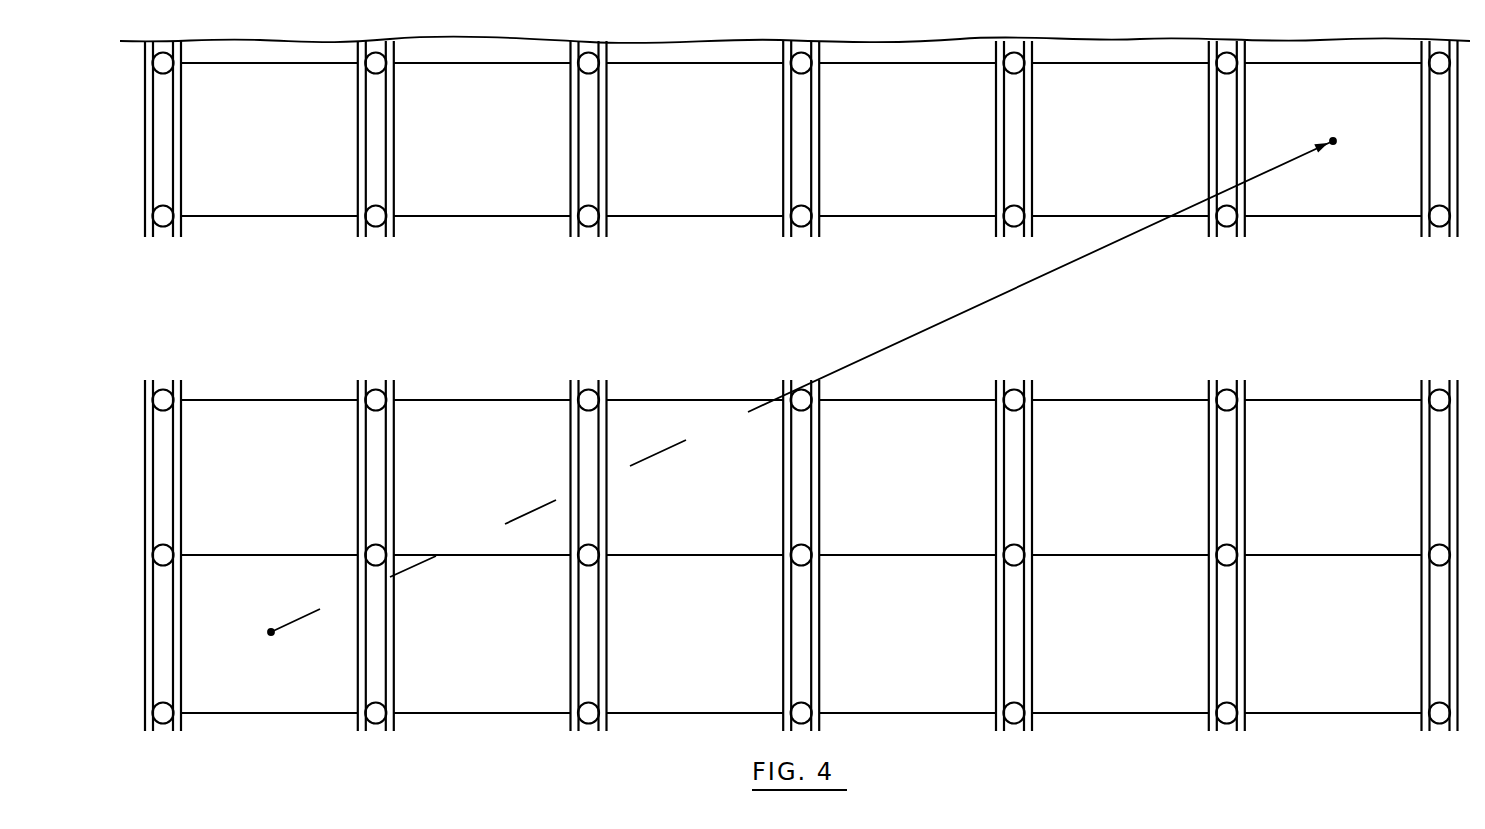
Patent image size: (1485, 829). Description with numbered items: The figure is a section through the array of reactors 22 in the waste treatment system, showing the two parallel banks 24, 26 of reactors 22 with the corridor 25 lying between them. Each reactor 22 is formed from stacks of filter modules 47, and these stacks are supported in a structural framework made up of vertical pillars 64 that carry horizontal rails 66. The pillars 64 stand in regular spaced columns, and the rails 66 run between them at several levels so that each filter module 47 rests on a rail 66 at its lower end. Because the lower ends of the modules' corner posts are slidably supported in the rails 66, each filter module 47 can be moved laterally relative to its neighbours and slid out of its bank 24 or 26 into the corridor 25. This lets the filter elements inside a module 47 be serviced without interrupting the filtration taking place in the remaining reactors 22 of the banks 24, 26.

The reactor 22 is at (483, 170).
The bank 24 is at (272, 174).
The corridor 25 is at (795, 179).
The bank 26 is at (255, 388).
The filter module 47 is at (1366, 456).
The vertical pillar 64 is at (1012, 390).
The rail 66 is at (996, 435).